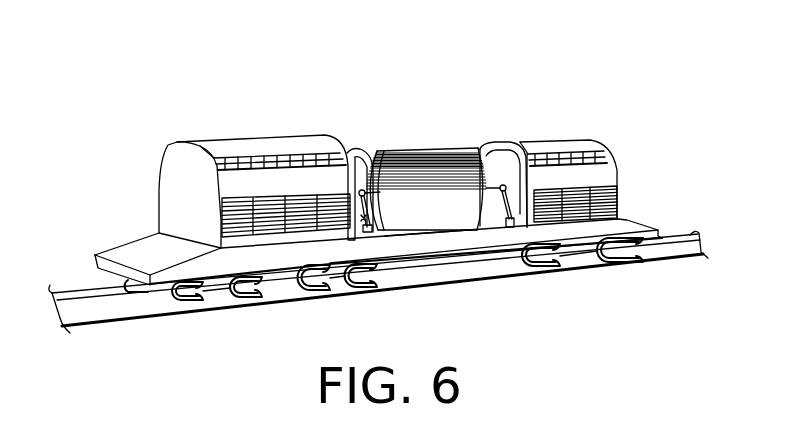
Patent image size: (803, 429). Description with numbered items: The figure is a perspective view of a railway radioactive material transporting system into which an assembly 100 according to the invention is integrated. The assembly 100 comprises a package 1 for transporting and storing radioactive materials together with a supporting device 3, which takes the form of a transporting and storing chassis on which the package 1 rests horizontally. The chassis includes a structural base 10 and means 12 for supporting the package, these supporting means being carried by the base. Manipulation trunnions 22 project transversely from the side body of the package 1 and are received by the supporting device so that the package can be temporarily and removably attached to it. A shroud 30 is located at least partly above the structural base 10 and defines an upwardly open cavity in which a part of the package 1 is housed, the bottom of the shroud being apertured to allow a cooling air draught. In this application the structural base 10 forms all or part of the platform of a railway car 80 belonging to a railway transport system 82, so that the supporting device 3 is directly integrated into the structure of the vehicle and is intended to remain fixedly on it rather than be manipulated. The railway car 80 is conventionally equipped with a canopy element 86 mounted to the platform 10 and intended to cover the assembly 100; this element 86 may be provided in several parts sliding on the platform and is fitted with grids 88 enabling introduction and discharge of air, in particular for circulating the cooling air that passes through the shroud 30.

The assembly 100 is at (510, 92).
The package 1 is at (428, 146).
The supporting device 3 is at (454, 234).
The structural base 10 is at (437, 230).
The means for supporting the package 12 is at (363, 231).
The manipulation trunnion 22 is at (346, 142).
The shroud 30 is at (405, 216).
The railway car 80 is at (298, 133).
The railway transport system 82 is at (218, 45).
The canopy element 86 is at (262, 172).
The grids 88 is at (210, 216).